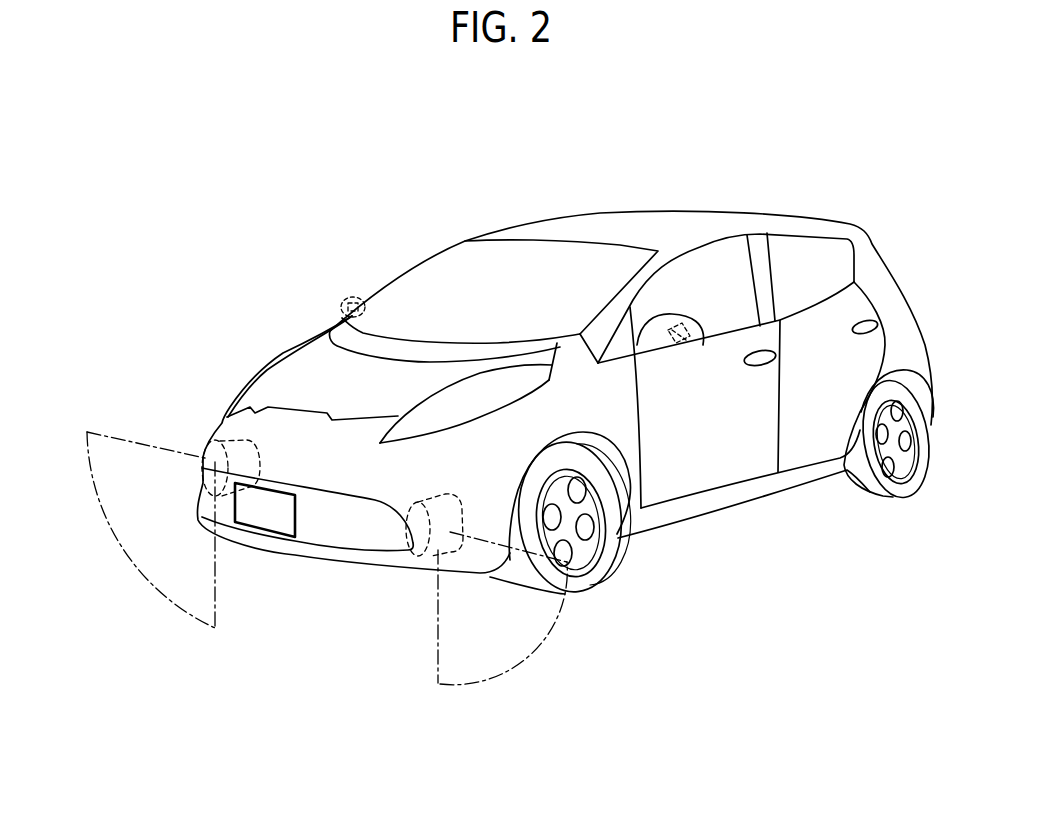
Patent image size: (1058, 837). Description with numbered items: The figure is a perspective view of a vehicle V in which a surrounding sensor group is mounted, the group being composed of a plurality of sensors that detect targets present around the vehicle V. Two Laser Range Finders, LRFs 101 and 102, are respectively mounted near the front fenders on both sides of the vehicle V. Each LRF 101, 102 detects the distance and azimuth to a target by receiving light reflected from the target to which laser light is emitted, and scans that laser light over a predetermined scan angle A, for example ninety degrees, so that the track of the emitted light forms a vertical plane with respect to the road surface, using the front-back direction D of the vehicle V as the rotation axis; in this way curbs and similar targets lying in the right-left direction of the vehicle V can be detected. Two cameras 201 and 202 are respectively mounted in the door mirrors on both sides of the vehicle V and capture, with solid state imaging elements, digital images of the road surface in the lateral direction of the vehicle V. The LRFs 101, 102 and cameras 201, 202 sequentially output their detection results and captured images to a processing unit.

The Laser Range Finder (LRF) 101 is at (420, 550).
The Laser Range Finder (LRF) 102 is at (213, 423).
The camera 201 is at (687, 345).
The camera 202 is at (352, 296).
The vehicle V is at (877, 263).
The scan angle A is at (142, 447).
The front-back direction D is at (273, 573).